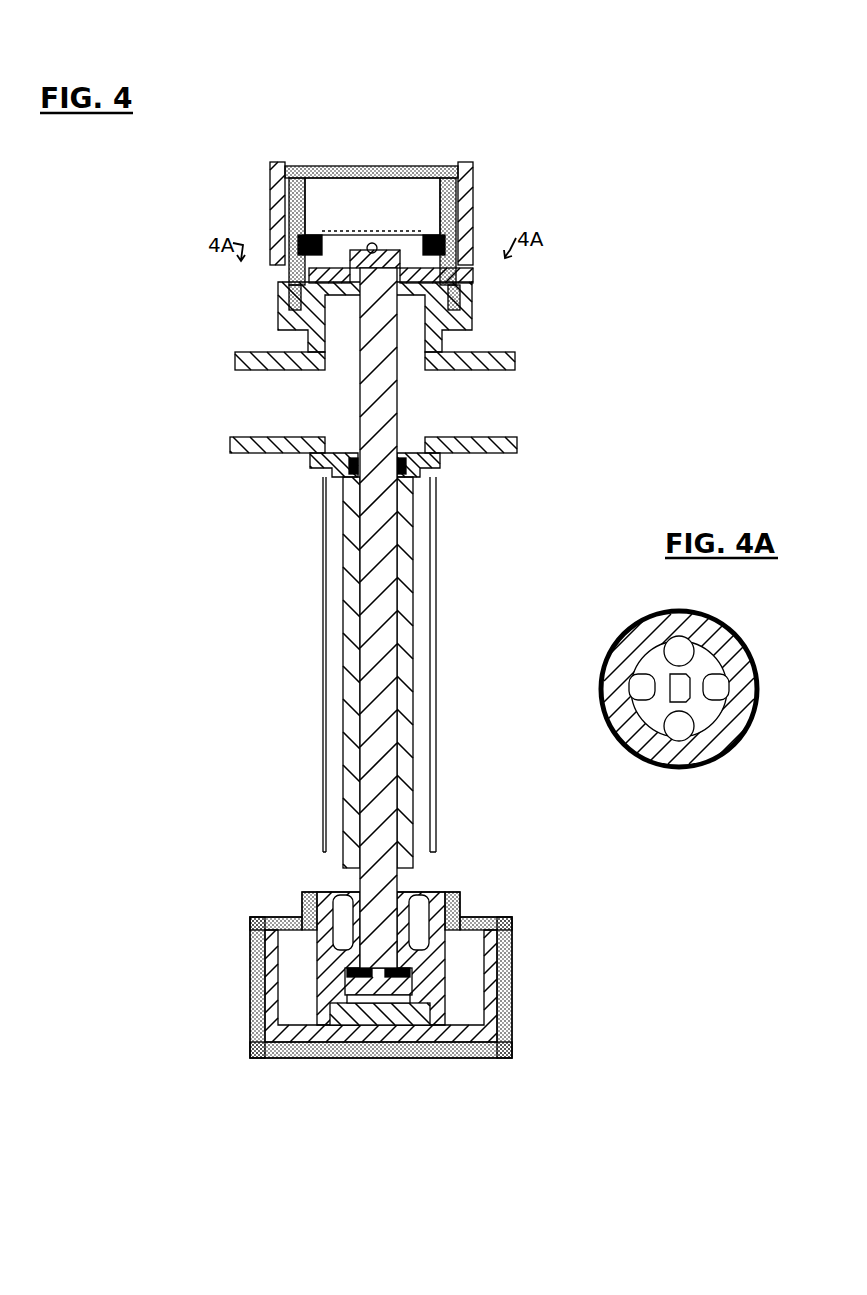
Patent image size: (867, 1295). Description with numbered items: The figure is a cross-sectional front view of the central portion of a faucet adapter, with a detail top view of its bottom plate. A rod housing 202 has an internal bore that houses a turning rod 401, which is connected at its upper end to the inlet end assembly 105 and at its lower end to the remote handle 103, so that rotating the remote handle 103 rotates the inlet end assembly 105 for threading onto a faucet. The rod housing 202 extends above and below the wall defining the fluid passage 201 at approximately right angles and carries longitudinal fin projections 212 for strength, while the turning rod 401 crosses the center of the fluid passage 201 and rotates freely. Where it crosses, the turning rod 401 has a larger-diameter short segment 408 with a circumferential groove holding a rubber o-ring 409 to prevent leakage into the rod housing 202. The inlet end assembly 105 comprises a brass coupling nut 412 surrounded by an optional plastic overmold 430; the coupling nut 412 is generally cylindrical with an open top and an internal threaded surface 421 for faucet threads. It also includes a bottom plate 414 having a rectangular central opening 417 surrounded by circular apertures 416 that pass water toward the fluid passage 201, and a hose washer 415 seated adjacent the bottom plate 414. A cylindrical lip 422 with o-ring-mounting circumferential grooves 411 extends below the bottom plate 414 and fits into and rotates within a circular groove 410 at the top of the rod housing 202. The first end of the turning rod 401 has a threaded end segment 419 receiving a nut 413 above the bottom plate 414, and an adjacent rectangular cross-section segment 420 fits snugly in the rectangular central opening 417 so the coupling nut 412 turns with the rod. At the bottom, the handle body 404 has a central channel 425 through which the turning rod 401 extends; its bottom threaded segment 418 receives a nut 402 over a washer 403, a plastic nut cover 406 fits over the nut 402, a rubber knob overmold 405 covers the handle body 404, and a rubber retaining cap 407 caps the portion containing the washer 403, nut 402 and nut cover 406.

In FIG. 4, the remote handle 103 is at (395, 1057).
In FIG. 4, the inlet end assembly 105 is at (138, 210).
In FIG. 4, the fluid passage 201 is at (282, 378).
In FIG. 4, the rod housing 202 is at (353, 832).
In FIG. 4, the longitudinal fin projections 212 is at (436, 587).
In FIG. 4, the turning rod 401 is at (400, 328).
In FIG. 4, the nut 402 is at (353, 1003).
In FIG. 4, the washer 403 is at (410, 1062).
In FIG. 4, the handle body 404 is at (470, 1055).
In FIG. 4, the rubber knob overmold 405 is at (510, 987).
In FIG. 4, the plastic nut cover 406 is at (365, 992).
In FIG. 4, the rubber retaining cap 407 is at (445, 1060).
In FIG. 4, the larger-diameter short segment 408 is at (350, 480).
In FIG. 4, the rubber o-ring 409 is at (352, 466).
In FIG. 4, the circular groove 410 is at (300, 300).
In FIG. 4, the o-ring-mounting circumferential grooves 411 is at (300, 300).
In FIG. 4, the coupling nut 412 is at (290, 212).
In FIG. 4A, the coupling nut 412 is at (619, 770).
In FIG. 4, the nut 413 is at (458, 240).
In FIG. 4, the bottom plate 414 is at (338, 262).
In FIG. 4A, the bottom plate 414 is at (650, 662).
In FIG. 4, the hose washer 415 is at (428, 245).
In FIG. 4A, the hose washer 415 is at (610, 695).
In FIG. 4A, the circular apertures 416 is at (684, 652).
In FIG. 4A, the rectangular central opening 417 is at (689, 697).
In FIG. 4, the threaded segment 418 is at (383, 992).
In FIG. 4, the threaded end segment 419 is at (372, 246).
In FIG. 4, the rectangular cross-section segment 420 is at (300, 322).
In FIG. 4, the threaded surface 421 is at (318, 188).
In FIG. 4, the cylindrical lip 422 is at (290, 310).
In FIG. 4, the central channel 425 is at (400, 937).
In FIG. 4, the plastic overmold 430 is at (470, 187).